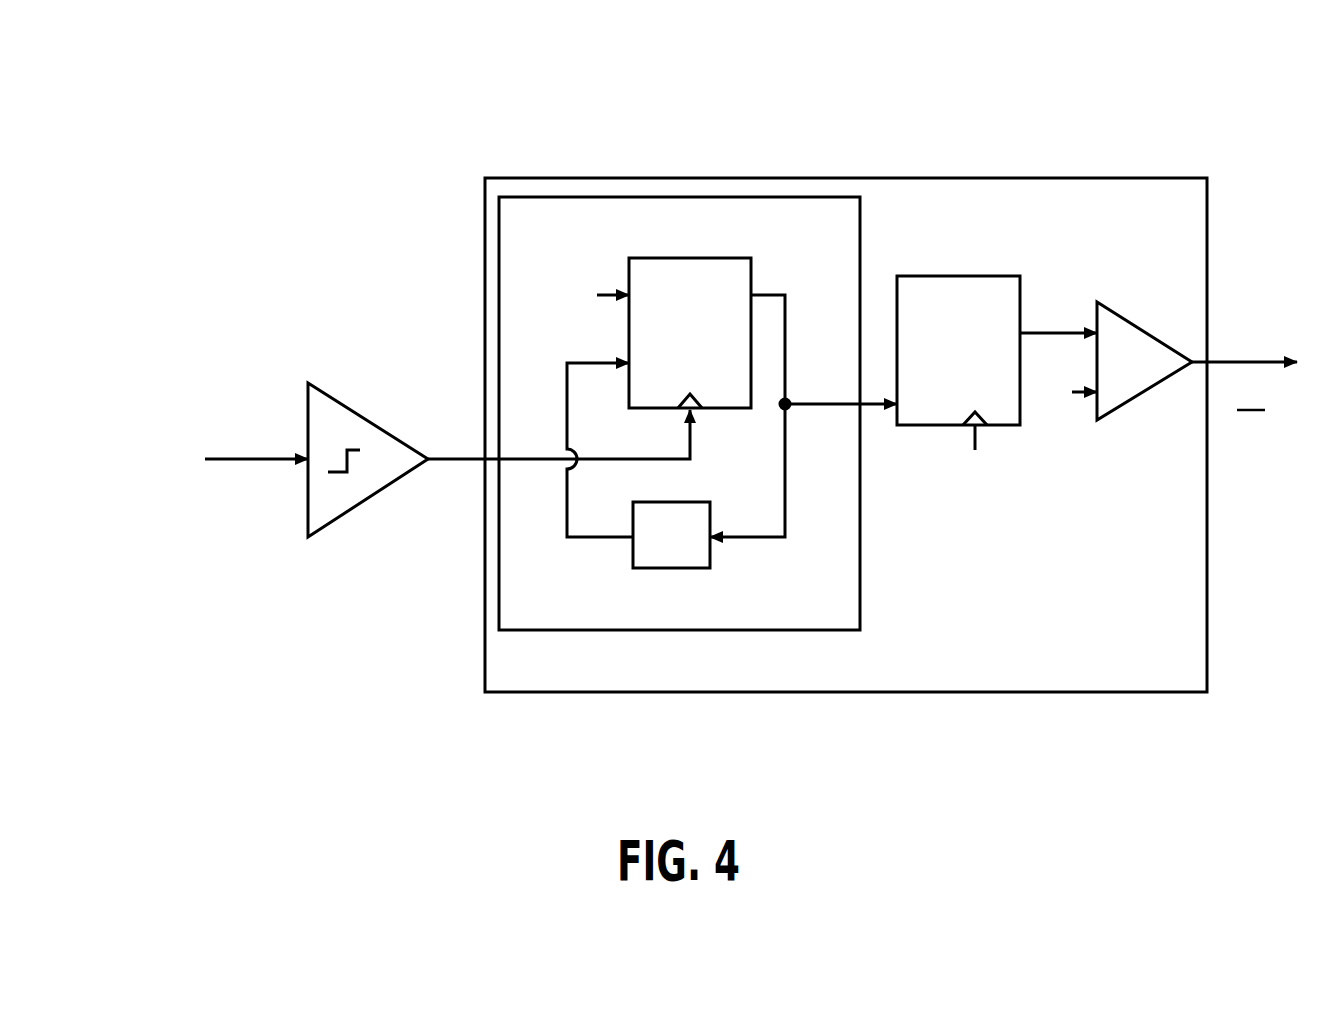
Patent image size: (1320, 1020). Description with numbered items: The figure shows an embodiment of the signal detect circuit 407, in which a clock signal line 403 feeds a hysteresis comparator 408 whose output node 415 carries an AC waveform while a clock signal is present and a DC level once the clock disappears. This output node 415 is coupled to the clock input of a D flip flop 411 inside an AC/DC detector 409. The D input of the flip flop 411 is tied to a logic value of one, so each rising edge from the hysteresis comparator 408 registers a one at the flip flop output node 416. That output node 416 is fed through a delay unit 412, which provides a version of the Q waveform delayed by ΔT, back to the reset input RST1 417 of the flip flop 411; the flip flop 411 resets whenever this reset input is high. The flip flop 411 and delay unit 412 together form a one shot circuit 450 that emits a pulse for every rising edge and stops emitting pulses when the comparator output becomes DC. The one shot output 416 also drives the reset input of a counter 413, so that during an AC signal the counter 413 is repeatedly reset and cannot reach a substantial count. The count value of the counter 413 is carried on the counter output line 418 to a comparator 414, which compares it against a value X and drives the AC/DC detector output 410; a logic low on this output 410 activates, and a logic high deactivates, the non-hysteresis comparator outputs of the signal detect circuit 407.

The clock signal line 403 is at (234, 458).
The clock detection circuit 407 is at (898, 38).
The hysteresis comparator 408 is at (353, 506).
The AC/DC detector 409 is at (950, 673).
The AC/DC detector output 410 is at (1257, 365).
The D flip flop 411 is at (716, 265).
The delay unit 412 is at (693, 561).
The counter 413 is at (995, 275).
The comparator 414 is at (1126, 330).
The hysteresis comparator output node 415 is at (538, 462).
The flip flop output node 416 is at (812, 400).
The reset input RST1 417 is at (590, 540).
The counter output signal 418 is at (1050, 330).
The one shot circuit 450 is at (598, 266).